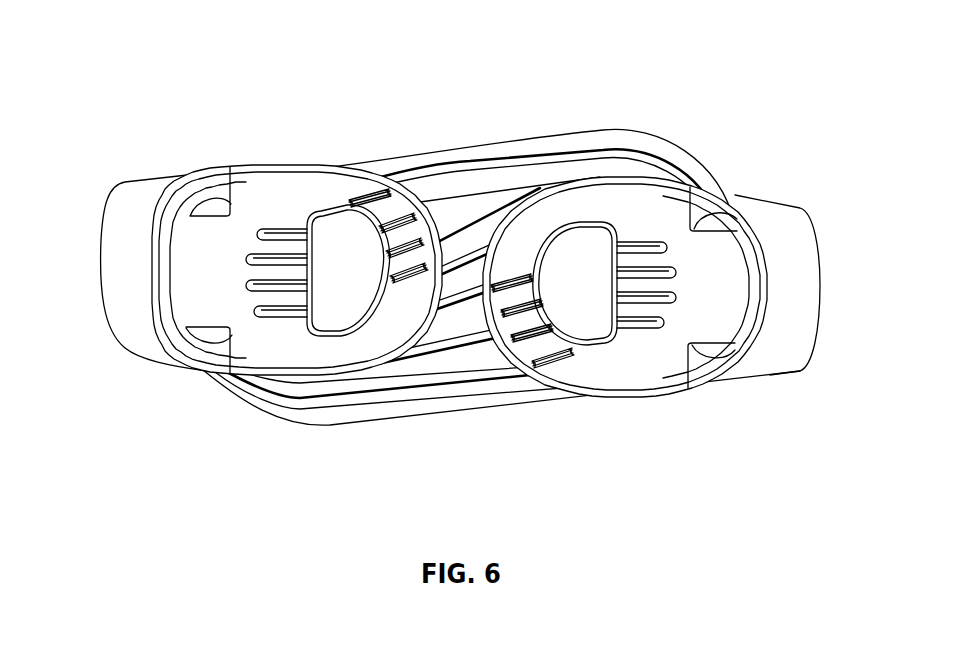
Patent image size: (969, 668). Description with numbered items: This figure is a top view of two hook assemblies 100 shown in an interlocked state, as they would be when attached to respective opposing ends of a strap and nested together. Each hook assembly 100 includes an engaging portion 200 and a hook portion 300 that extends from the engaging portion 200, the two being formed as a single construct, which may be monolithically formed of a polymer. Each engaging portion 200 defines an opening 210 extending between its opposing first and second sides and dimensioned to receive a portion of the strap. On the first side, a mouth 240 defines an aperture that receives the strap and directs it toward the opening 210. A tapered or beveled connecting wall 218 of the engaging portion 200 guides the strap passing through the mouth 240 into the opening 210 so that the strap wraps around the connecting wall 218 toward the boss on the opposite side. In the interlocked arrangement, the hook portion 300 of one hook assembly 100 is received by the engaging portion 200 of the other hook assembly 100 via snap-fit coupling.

The hook assembly 100 is at (458, 283).
The engaging portion 200 is at (240, 184).
The opening 210 is at (334, 232).
The connecting wall 218 is at (296, 221).
The mouth 240 is at (137, 338).
The hook portion 300 is at (632, 139).